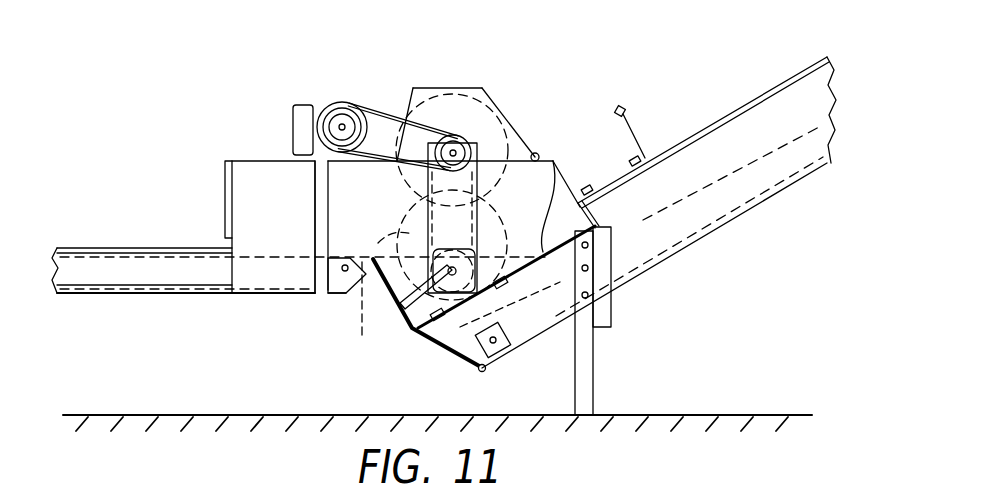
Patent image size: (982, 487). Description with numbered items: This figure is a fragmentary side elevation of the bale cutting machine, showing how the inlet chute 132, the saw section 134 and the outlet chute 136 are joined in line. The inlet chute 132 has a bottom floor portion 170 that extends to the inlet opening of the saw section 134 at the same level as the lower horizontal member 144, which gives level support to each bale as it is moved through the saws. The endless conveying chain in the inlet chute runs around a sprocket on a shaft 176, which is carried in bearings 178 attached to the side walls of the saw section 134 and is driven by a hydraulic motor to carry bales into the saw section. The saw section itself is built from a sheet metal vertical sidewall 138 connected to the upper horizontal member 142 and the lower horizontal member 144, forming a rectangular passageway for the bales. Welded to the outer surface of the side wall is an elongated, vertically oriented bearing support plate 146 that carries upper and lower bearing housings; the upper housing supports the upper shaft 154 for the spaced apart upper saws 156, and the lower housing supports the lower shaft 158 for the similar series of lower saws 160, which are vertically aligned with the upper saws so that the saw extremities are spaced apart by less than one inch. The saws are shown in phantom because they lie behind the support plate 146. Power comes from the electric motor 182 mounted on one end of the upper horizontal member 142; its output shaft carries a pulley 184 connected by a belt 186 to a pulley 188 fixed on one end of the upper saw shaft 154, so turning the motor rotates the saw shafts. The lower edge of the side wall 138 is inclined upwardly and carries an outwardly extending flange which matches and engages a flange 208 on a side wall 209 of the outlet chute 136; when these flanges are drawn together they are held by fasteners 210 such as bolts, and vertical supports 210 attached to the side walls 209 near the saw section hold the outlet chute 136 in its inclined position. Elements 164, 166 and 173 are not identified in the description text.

The inlet chute 132 is at (108, 296).
The bottom floor portion 170 is at (127, 297).
The vertical sidewall 138 is at (295, 237).
The bearings 178 is at (313, 296).
The shaft 176 is at (332, 318).
The lower horizontal member 144 is at (362, 330).
The pulley 184 is at (317, 123).
The electric motor 182 is at (335, 100).
The belt 186 is at (387, 108).
The upper shaft 154 is at (455, 150).
The pulley 188 is at (463, 137).
The housing top wall 166 is at (453, 89).
The saw section 134 is at (467, 90).
The upper saws 156 is at (447, 93).
The lower saws 160 is at (410, 228).
The bearing support plate 146 is at (491, 218).
The lower shaft 158 is at (392, 300).
The vertical supports 210 is at (427, 334).
The upper horizontal member 142 is at (563, 188).
The flange 208 is at (626, 116).
The upper rail 164 is at (554, 160).
The outlet chute 136 is at (740, 214).
The side walls 209 is at (757, 171).
The support post 173 is at (593, 394).